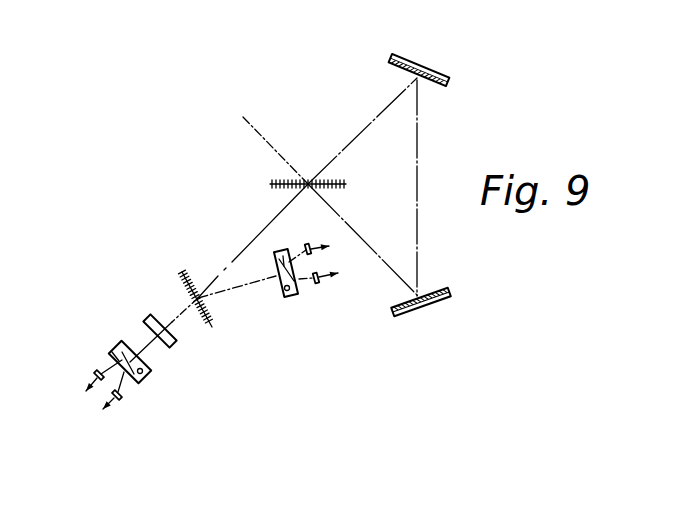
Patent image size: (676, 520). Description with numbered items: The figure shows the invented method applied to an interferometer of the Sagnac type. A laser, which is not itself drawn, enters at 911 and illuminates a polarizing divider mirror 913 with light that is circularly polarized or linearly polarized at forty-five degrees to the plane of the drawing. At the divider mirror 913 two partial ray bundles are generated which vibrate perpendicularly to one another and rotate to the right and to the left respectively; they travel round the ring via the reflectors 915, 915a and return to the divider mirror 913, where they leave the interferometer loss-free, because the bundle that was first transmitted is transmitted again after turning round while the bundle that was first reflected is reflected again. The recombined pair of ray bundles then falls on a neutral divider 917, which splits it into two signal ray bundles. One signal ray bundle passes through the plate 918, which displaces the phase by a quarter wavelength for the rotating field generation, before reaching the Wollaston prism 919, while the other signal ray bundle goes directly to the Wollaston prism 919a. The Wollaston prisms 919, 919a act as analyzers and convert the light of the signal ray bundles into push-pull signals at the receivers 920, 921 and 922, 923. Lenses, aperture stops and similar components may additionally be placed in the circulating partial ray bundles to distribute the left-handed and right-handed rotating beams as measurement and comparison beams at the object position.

The laser illumination 911 is at (243, 117).
The polarizing divider mirror 913 is at (272, 178).
The reflector 915 is at (438, 46).
The reflector 915a is at (431, 310).
The neutral divider 917 is at (214, 319).
The quarter-wave plate 918 is at (151, 313).
The Wollaston prism 919 is at (146, 376).
The Wollaston prism 919a is at (293, 294).
The receiver 920 is at (97, 369).
The receiver 921 is at (120, 398).
The receiver 922 is at (304, 246).
The receiver 923 is at (319, 282).